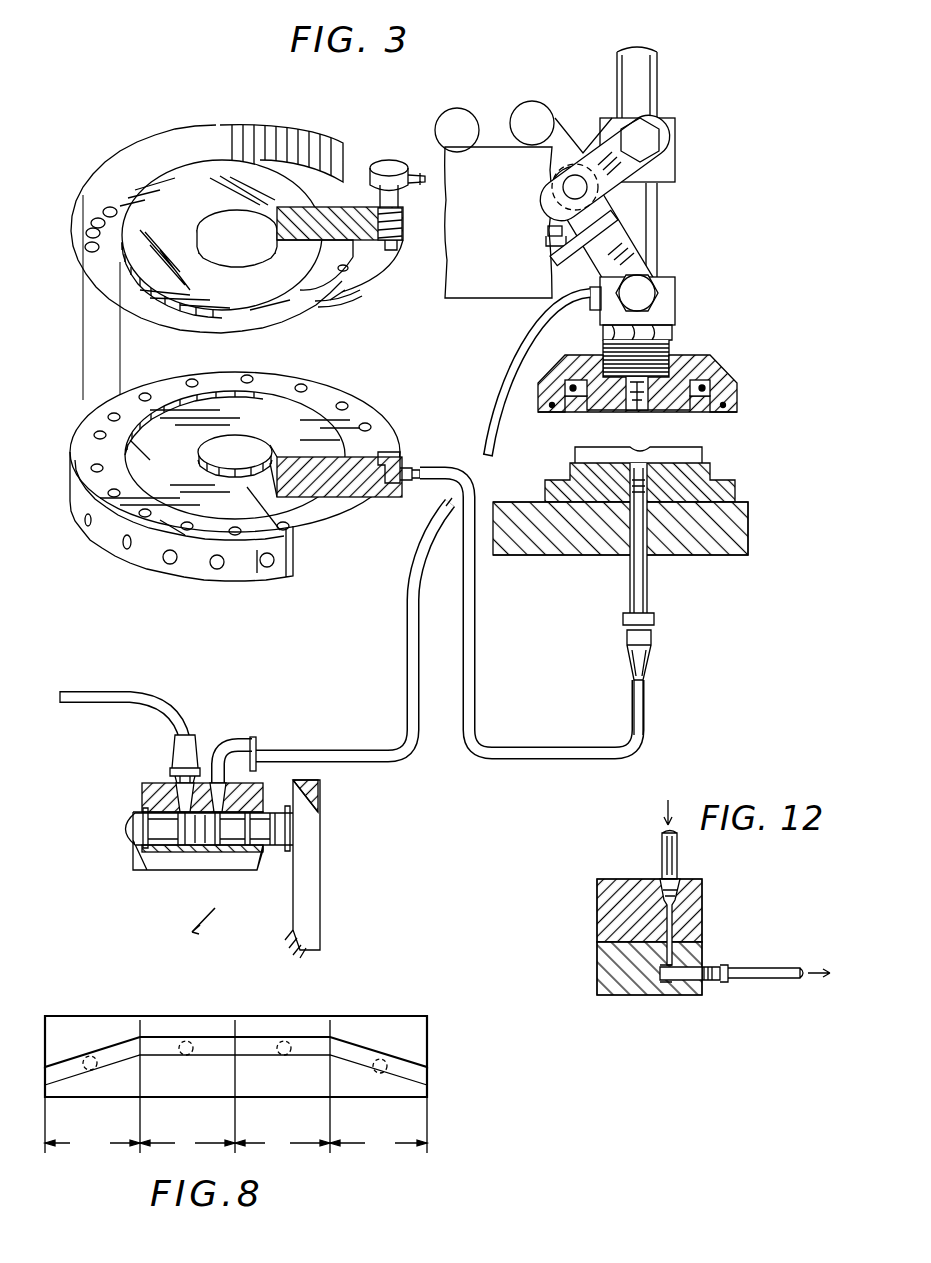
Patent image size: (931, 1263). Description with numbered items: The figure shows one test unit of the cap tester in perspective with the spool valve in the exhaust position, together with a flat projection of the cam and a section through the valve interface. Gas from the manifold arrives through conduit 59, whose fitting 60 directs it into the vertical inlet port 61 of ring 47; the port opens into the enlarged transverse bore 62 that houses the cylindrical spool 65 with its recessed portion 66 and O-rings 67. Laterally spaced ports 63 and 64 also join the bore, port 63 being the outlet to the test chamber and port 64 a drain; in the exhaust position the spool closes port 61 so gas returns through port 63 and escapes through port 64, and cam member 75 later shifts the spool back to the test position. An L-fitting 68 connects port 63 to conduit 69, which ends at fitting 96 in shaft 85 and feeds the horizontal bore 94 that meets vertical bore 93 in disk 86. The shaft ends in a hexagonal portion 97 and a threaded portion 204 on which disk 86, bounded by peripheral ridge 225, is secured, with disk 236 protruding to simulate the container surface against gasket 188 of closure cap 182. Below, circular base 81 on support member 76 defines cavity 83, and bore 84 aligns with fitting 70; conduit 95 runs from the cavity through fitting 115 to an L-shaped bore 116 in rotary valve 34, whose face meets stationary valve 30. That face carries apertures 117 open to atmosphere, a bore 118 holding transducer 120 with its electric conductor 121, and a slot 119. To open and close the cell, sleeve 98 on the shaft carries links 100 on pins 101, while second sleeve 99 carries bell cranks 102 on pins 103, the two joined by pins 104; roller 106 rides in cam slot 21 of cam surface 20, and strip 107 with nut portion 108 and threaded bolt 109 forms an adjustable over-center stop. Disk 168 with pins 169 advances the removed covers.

In FIG. 3, the stationary valve 30 is at (232, 130).
In FIG. 12, the stationary valve 30 is at (696, 912).
In FIG. 3, the apertures 117 is at (85, 247).
In FIG. 3, the transducer 120 is at (395, 165).
In FIG. 3, the cam slot 21 is at (445, 155).
In FIG. 3, the electric conductor 121 is at (415, 184).
In FIG. 3, the bore 118 is at (400, 238).
In FIG. 3, the slot 119 is at (388, 275).
In FIG. 12, the slot 119 is at (675, 948).
In FIG. 3, the cam surface 20 is at (445, 284).
In FIG. 8, the cam surface 20 is at (400, 1020).
In FIG. 3, the L-shaped bore 116 is at (365, 422).
In FIG. 3, the fitting 115 is at (401, 452).
In FIG. 3, the rotary valve 34 is at (338, 497).
In FIG. 12, the rotary valve 34 is at (604, 966).
In FIG. 3, the roller 106 is at (462, 110).
In FIG. 3, the bell crank 102 is at (548, 118).
In FIG. 3, the shaft 85 is at (628, 100).
In FIG. 3, the pin 103 is at (650, 130).
In FIG. 3, the second sleeve 99 is at (678, 140).
In FIG. 3, the pin 104 is at (562, 187).
In FIG. 3, the nut portion 108 is at (555, 226).
In FIG. 3, the threaded bolt 109 is at (551, 240).
In FIG. 3, the strip 107 is at (558, 252).
In FIG. 3, the horizontally disposed bore 94 is at (595, 282).
In FIG. 3, the fitting 96 is at (588, 293).
In FIG. 3, the link 100 is at (655, 250).
In FIG. 3, the pin 101 is at (650, 285).
In FIG. 3, the sleeve 98 is at (690, 292).
In FIG. 3, the hexagonal portion 97 is at (668, 300).
In FIG. 3, the vertical bore 93 is at (668, 330).
In FIG. 3, the threaded portion 204 is at (670, 352).
In FIG. 3, the disk 86 is at (560, 365).
In FIG. 3, the disk 236 is at (590, 423).
In FIG. 3, the peripheral ridge 225 is at (735, 410).
In FIG. 3, the cavity 83 is at (705, 452).
In FIG. 3, the closure cap 182 is at (568, 462).
In FIG. 3, the plastisol gasket 188 is at (560, 486).
In FIG. 3, the circular base 81 is at (712, 481).
In FIG. 3, the bore 84 is at (650, 498).
In FIG. 3, the support member 76 is at (568, 555).
In FIG. 3, the fitting 70 is at (630, 590).
In FIG. 3, the conduit 69 is at (407, 640).
In FIG. 3, the conduit 95 is at (476, 640).
In FIG. 3, the conduit 59 is at (185, 732).
In FIG. 3, the fitting 60 is at (222, 760).
In FIG. 3, the L-fitting 68 is at (252, 745).
In FIG. 3, the ring 47 is at (148, 793).
In FIG. 3, the inlet port 61 is at (178, 792).
In FIG. 3, the port 63 is at (255, 794).
In FIG. 3, the cam member 75 is at (312, 795).
In FIG. 3, the cylindrical spool 65 is at (285, 830).
In FIG. 3, the port 64 is at (258, 848).
In FIG. 3, the O-rings 67 is at (178, 848).
In FIG. 3, the recessed portion 66 is at (218, 852).
In FIG. 3, the transverse bore 62 is at (238, 852).
In FIG. 12, the pins 169 is at (680, 848).
In FIG. 12, the disk 168 is at (684, 890).